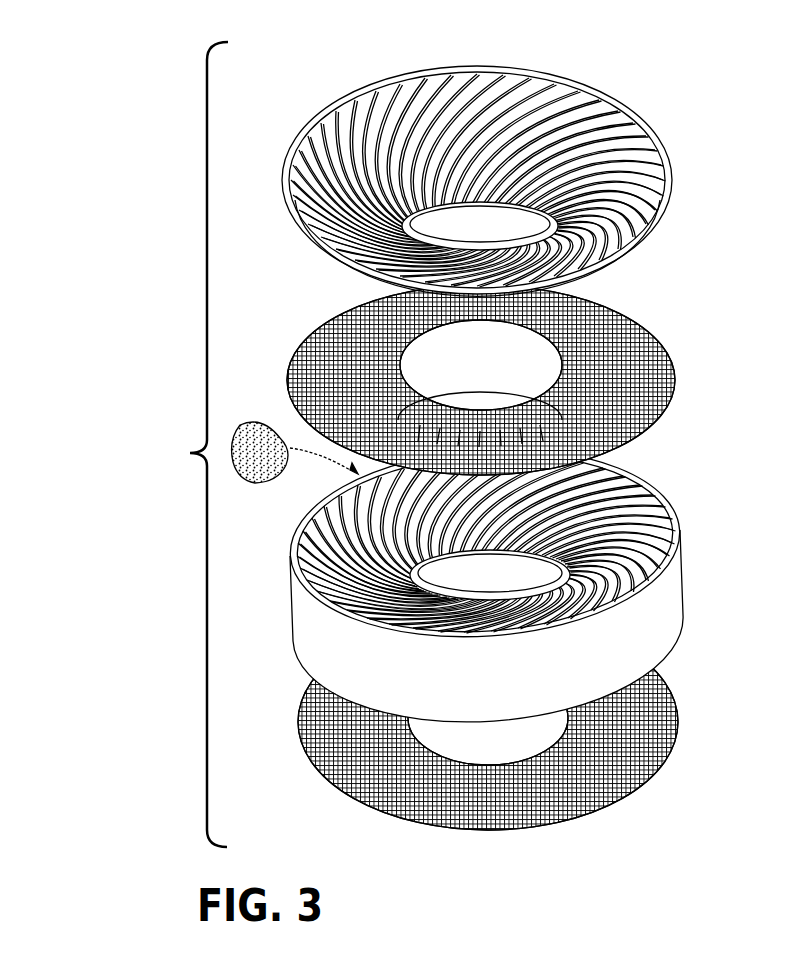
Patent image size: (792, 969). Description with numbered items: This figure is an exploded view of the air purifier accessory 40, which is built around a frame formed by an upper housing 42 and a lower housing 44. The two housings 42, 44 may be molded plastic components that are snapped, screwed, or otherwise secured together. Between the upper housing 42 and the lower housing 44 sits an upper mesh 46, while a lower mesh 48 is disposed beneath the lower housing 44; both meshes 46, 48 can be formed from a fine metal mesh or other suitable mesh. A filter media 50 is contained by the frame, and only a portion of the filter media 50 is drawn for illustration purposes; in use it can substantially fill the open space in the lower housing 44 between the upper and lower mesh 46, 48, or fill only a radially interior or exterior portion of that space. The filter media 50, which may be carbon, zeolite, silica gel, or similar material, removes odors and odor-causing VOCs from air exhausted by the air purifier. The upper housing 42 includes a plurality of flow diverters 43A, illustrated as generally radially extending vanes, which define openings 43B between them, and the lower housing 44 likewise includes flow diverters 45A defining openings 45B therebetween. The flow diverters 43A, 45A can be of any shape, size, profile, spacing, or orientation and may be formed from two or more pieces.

The air purifier accessory 40 is at (193, 444).
The upper housing 42 is at (527, 163).
The flow diverters 43A is at (617, 132).
The openings 43B is at (618, 130).
The lower housing 44 is at (535, 581).
The flow diverters 45A is at (680, 528).
The openings 45B is at (660, 498).
The upper mesh 46 is at (647, 307).
The lower mesh 48 is at (638, 738).
The filter media 50 is at (265, 420).